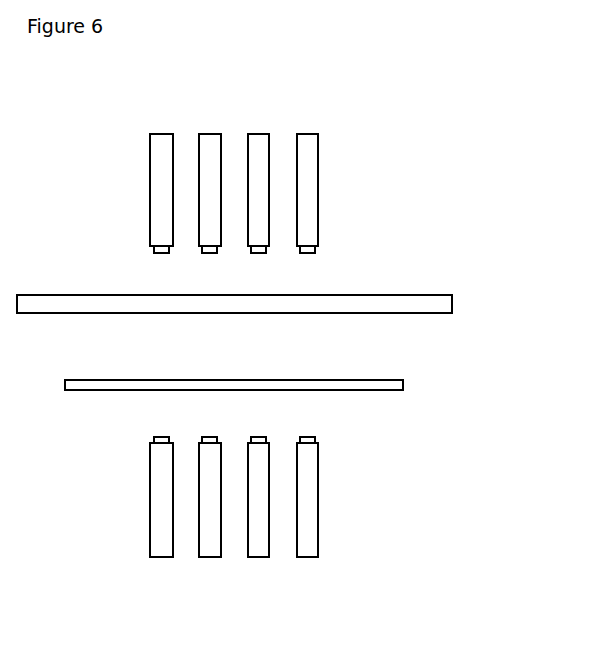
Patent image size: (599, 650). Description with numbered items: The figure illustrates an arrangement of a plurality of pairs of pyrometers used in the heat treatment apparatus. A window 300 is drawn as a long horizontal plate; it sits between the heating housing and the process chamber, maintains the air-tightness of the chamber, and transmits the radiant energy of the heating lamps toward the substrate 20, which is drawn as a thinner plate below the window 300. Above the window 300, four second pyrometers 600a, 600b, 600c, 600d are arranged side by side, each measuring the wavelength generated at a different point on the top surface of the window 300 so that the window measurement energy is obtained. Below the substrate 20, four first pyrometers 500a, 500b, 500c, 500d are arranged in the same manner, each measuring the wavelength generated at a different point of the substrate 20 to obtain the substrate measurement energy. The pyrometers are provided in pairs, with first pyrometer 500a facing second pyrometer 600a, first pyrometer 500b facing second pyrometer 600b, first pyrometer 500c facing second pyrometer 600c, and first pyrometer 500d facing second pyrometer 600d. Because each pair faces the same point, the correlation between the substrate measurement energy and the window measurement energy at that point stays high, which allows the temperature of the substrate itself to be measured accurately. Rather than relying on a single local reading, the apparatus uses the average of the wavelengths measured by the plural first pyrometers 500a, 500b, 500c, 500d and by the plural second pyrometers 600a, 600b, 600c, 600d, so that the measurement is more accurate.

The second pyrometer 600a is at (163, 134).
The second pyrometer 600b is at (213, 134).
The second pyrometer 600c is at (259, 134).
The second pyrometer 600d is at (306, 134).
The window 300 is at (452, 303).
The substrate 20 is at (403, 386).
The first pyrometer 500a is at (162, 557).
The first pyrometer 500b is at (210, 557).
The first pyrometer 500c is at (258, 557).
The first pyrometer 500d is at (305, 557).